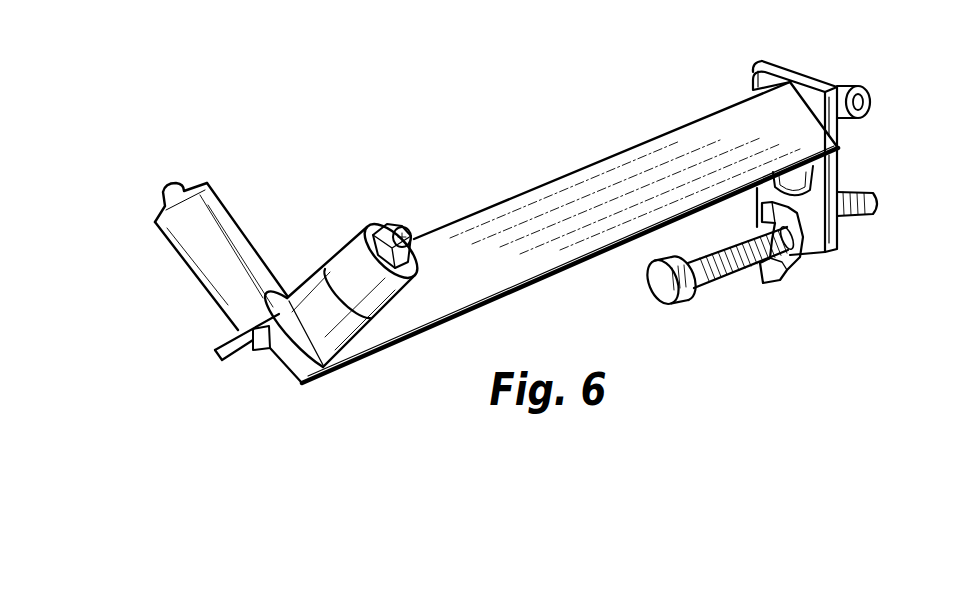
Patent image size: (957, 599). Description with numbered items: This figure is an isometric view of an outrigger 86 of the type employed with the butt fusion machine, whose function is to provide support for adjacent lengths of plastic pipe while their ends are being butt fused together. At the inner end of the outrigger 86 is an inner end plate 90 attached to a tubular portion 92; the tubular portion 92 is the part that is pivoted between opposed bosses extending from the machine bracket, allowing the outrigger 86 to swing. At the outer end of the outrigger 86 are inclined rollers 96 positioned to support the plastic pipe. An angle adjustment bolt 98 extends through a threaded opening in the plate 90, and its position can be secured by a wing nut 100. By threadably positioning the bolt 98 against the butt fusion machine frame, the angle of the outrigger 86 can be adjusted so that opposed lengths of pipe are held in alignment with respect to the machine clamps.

The outrigger 86 is at (578, 197).
The inner end plate 90 is at (830, 185).
The tubular portion 92 is at (843, 92).
The inclined rollers 96 is at (354, 262).
The angle adjustment bolt 98 is at (737, 276).
The wing nut 100 is at (788, 275).